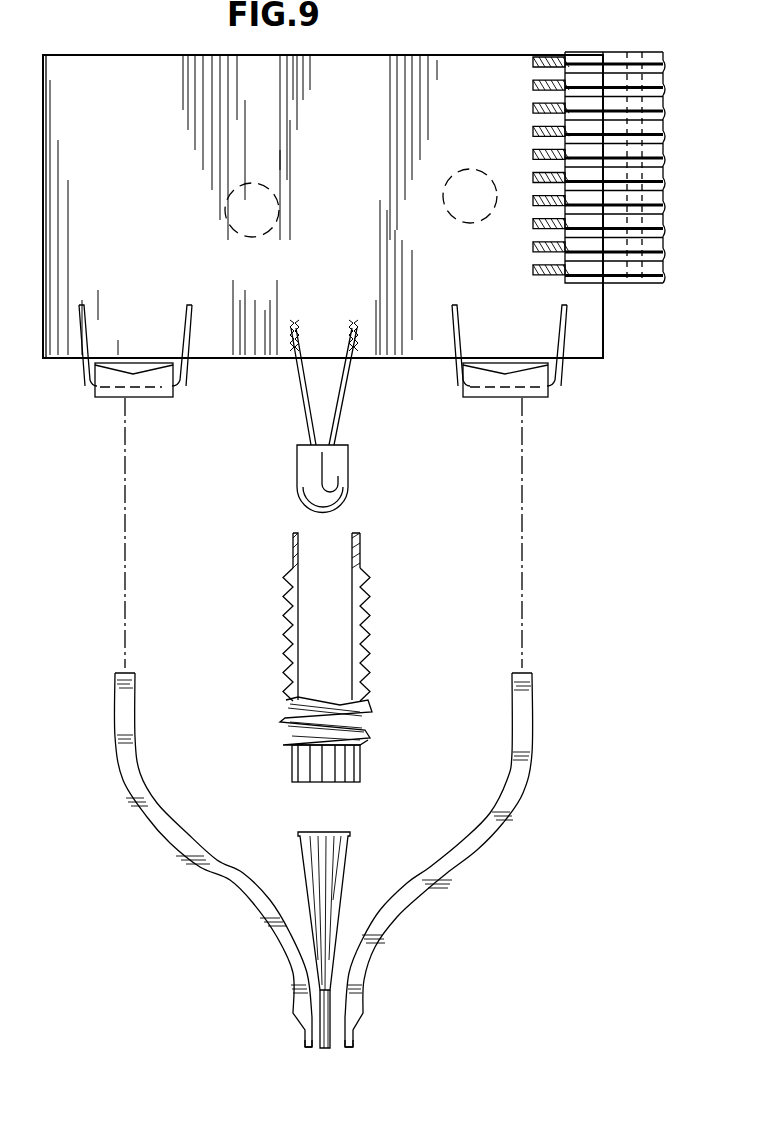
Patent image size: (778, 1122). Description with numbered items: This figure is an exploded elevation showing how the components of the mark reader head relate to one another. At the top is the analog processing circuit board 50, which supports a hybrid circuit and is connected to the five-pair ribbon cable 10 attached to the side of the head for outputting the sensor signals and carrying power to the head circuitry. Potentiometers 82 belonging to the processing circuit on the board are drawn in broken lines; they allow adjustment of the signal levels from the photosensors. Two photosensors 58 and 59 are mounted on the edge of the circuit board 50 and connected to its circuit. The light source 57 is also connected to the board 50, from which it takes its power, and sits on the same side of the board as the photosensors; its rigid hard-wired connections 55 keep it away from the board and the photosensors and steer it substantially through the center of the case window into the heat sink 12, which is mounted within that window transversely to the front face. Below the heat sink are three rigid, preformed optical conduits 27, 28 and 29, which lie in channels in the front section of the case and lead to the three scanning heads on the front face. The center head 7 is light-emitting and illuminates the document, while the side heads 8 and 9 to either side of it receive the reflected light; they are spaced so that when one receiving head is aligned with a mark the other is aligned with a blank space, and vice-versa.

The analog processing circuit board 50 is at (162, 90).
The five-pair ribbon cable 10 is at (646, 84).
The potentiometers 82 is at (279, 211).
The photosensor 58 is at (162, 388).
The photosensor 59 is at (542, 392).
The rigid connections 55 is at (310, 405).
The light source 57 is at (338, 479).
The heat sink 12 is at (370, 653).
The optical conduit 27 is at (330, 845).
The center head 7 is at (325, 1048).
The optical conduit 28 is at (225, 885).
The optical conduit 29 is at (476, 850).
The side head 8 is at (311, 1048).
The side head 9 is at (348, 1048).